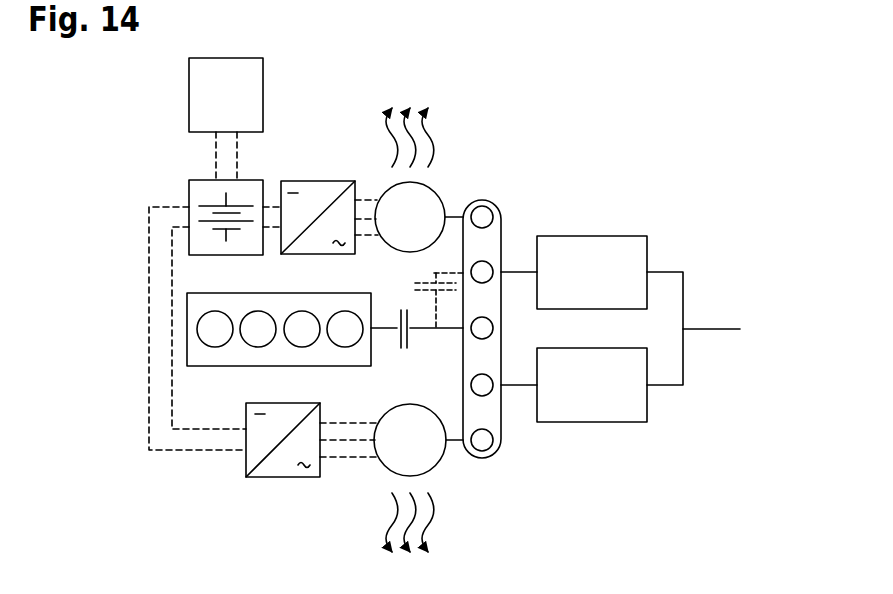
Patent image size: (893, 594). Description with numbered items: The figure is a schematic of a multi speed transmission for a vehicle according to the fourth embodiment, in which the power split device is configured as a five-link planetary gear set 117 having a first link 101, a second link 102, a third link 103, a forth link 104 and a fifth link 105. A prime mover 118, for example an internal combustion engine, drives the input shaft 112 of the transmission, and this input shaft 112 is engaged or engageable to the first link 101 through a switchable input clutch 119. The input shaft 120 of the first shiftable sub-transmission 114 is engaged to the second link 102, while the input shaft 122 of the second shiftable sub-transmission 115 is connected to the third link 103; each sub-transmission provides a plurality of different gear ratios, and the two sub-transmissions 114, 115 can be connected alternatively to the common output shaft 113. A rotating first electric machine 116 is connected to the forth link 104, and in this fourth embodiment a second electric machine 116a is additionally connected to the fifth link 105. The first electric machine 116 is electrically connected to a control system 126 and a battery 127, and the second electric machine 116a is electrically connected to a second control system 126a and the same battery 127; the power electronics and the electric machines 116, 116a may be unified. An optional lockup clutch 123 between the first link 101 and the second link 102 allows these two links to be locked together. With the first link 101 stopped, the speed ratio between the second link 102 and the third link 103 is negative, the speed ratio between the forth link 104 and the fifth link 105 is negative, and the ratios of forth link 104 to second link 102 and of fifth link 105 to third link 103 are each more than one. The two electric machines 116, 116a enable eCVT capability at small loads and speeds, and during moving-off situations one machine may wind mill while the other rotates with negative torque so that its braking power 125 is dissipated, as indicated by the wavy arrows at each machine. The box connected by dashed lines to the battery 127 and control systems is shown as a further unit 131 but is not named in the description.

The first link 101 is at (482, 328).
The second link 102 is at (482, 272).
The third link 103 is at (482, 385).
The forth link 104 is at (482, 206).
The fifth link 105 is at (482, 451).
The input shaft 112 is at (395, 333).
The output shaft 113 is at (712, 329).
The first shiftable sub-transmission 114 is at (612, 287).
The second shiftable sub-transmission 115 is at (612, 400).
The first electric machine 116 is at (430, 234).
The second electric machine 116a is at (440, 451).
The five-link planetary gear set 117 is at (504, 214).
The prime mover 118 is at (195, 307).
The switchable input clutch 119 is at (410, 338).
The input shaft of the first sub-transmission 120 is at (512, 272).
The input shaft of the second sub-transmission 122 is at (525, 388).
The lockup clutch 123 is at (424, 284).
The braking power 125 is at (442, 133).
The control system 126 is at (312, 181).
The second control system 126a is at (247, 460).
The battery 127 is at (189, 188).
The control unit 131 is at (245, 111).